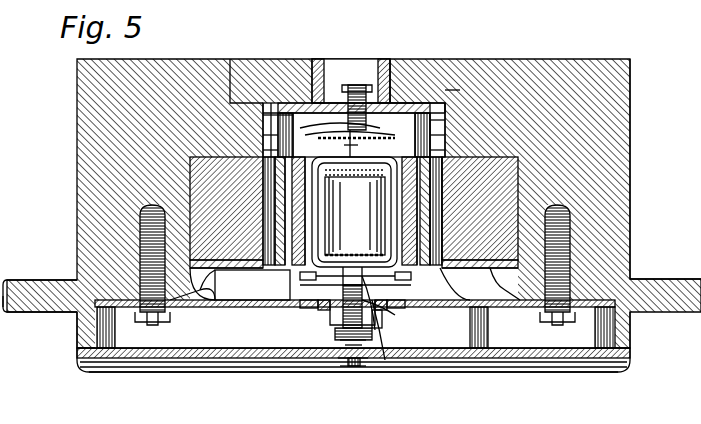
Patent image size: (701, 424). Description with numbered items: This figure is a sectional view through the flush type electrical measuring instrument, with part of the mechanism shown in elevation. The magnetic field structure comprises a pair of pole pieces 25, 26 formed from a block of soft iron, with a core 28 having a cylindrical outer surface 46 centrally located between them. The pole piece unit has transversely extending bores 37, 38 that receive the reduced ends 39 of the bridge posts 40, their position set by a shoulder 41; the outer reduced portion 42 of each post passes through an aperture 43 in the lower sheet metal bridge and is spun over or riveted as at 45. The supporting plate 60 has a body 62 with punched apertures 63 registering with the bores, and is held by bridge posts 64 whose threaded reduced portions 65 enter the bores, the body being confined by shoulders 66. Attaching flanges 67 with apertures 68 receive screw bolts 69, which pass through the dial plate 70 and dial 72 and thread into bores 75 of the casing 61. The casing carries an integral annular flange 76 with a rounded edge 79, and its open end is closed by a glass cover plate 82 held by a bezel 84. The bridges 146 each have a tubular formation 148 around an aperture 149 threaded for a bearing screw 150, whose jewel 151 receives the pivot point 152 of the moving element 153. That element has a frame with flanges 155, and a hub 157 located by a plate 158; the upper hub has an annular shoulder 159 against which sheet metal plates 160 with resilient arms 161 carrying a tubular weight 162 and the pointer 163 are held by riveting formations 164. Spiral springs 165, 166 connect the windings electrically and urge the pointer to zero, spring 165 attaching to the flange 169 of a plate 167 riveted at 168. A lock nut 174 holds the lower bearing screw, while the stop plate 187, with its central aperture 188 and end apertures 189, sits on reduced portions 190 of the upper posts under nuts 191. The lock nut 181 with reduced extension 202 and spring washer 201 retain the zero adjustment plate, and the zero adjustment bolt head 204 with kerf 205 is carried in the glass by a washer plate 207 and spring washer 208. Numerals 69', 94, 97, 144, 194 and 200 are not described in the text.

The pole piece 25 is at (280, 200).
The pole piece 26 is at (445, 185).
The core 28 is at (284, 212).
The transverse bore 37 is at (430, 170).
The transverse bore 38 is at (272, 172).
The reduced end 39 is at (268, 185).
The bridge post 40 is at (440, 120).
The shoulder 41 is at (440, 135).
The reduced portion 42 is at (462, 85).
The bridge aperture 43 is at (432, 115).
The spun or riveted end 45 is at (447, 120).
The cylindrical outer surface 46 is at (294, 225).
The supporting plate 60 is at (225, 305).
The casing 61 is at (632, 180).
The body portion 62 is at (432, 240).
The aperture 63 is at (425, 225).
The bridge post 64 is at (275, 288).
The reduced portion 65 is at (420, 212).
The shoulder 66 is at (420, 200).
The attaching flange 67 is at (653, 235).
The aperture 68 is at (140, 312).
The screw bolt 69 is at (406, 270).
The passage 69' is at (345, 302).
The dial plate 70 is at (480, 310).
The dial 72 is at (518, 305).
The bore 75 is at (625, 215).
The annular flange 76 is at (42, 280).
The rounded edge 79 is at (10, 312).
The glass cover plate 82 is at (178, 352).
The bezel 84 is at (122, 365).
The casing wall 94 is at (300, 158).
The casing part 97 is at (438, 150).
The cover plate 144 is at (400, 110).
The bridge 146 is at (378, 335).
The tubular formation 148 is at (392, 100).
The aperture 149 is at (312, 103).
The bearing screw 150 is at (372, 60).
The jewel 151 is at (272, 100).
The pivot point 152 is at (245, 75).
The moving element 153 is at (290, 140).
The flange 155 is at (369, 215).
The hub 157 is at (356, 167).
The plate 158 is at (355, 215).
The annular shoulder 159 is at (355, 244).
The sheet metal plate 160 is at (339, 216).
The resilient arm 161 is at (411, 274).
The tubular weight 162 is at (411, 284).
The pointer 163 is at (359, 216).
The riveting formation 164 is at (367, 216).
The spiral spring 165 is at (275, 118).
The spiral spring 166 is at (300, 240).
The sheet metal plate 167 is at (366, 138).
The rivet formation 168 is at (354, 212).
The upwardly turned flange 169 is at (340, 144).
The lock nut 174 is at (356, 84).
The lock nut 181 is at (362, 362).
The stop plate 187 is at (390, 340).
The central aperture 188 is at (392, 310).
The end aperture 189 is at (410, 315).
The reduced portion 190 is at (345, 330).
The nut 191 is at (318, 305).
The gasket 194 is at (355, 166).
The bushing 200 is at (330, 318).
The spring washer 201 is at (318, 308).
The reduced extension 202 is at (387, 323).
The head 204 is at (350, 362).
The kerf 205 is at (353, 368).
The washer plate 207 is at (348, 345).
The spring washer 208 is at (352, 348).